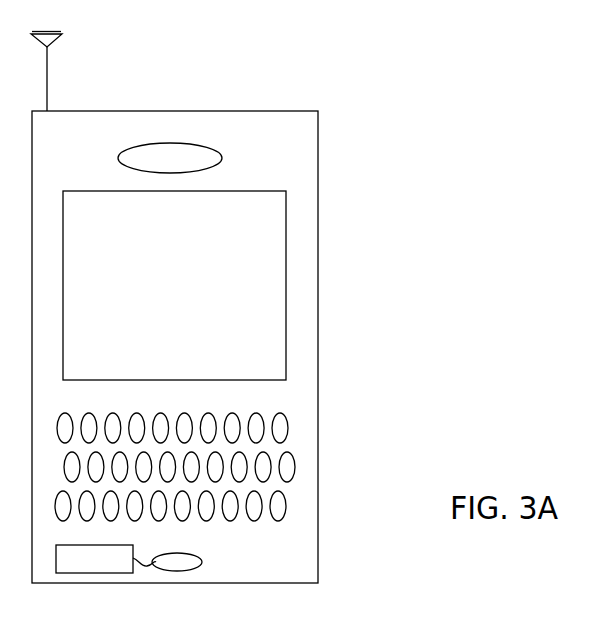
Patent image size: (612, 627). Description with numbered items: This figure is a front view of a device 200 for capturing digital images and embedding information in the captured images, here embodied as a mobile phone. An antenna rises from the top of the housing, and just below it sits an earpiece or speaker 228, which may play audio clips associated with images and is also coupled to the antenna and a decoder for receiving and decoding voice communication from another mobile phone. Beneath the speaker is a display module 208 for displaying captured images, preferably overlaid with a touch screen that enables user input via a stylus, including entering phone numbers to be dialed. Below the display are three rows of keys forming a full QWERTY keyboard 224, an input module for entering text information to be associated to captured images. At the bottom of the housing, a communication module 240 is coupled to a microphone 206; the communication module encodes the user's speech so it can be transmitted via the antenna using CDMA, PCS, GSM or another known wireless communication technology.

The device 200 is at (320, 206).
The earpiece or speaker 228 is at (173, 143).
The display module 208 is at (286, 260).
The full QWERTY keyboard 224 is at (303, 466).
The communication module 240 is at (85, 563).
The microphone 206 is at (178, 553).